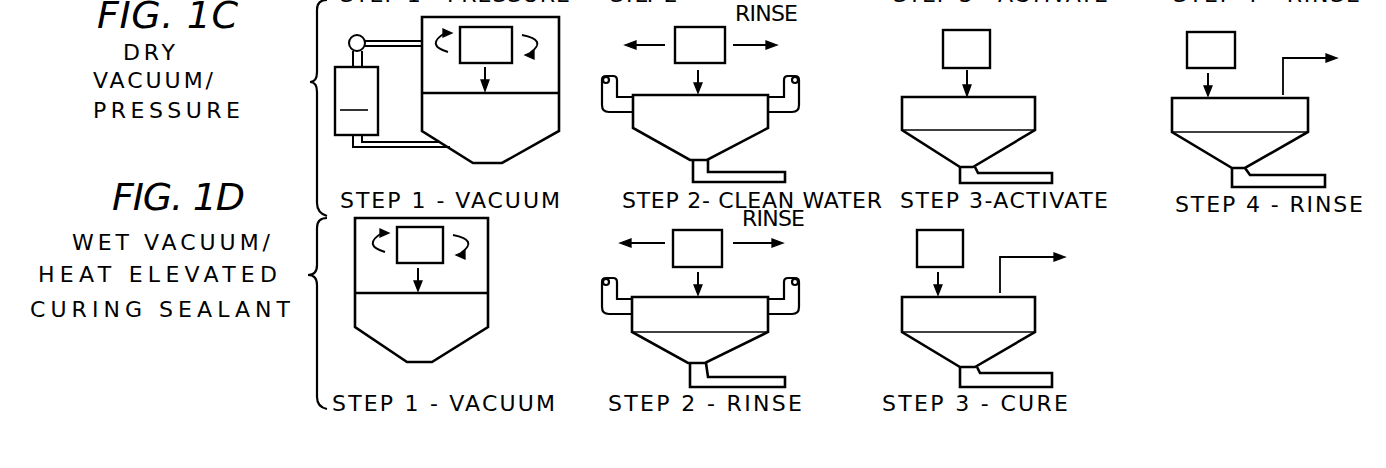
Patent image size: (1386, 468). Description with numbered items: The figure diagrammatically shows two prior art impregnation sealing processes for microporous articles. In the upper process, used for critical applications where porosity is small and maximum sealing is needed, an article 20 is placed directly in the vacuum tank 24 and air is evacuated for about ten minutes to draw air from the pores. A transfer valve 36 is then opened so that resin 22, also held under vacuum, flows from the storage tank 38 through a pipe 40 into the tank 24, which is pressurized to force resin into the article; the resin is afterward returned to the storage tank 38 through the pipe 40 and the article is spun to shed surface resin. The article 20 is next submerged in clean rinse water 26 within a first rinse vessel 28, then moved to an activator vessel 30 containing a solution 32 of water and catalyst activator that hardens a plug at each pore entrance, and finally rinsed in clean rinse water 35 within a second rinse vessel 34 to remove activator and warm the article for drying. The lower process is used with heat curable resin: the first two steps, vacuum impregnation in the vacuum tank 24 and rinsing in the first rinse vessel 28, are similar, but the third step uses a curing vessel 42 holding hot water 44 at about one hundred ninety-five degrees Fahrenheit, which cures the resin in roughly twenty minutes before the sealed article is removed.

In FIG. 1C, the article 20 is at (497, 53).
In FIG. 1D, the article 20 is at (425, 252).
In FIG. 1C, the resin 22 is at (548, 115).
In FIG. 1D, the resin 22 is at (480, 308).
In FIG. 1C, the vacuum tank 24 is at (560, 77).
In FIG. 1D, the vacuum tank 24 is at (488, 226).
In FIG. 1D, the clean rinse water 26 is at (643, 312).
In FIG. 1C, the first rinse vessel 28 is at (770, 120).
In FIG. 1D, the first rinse vessel 28 is at (770, 322).
In FIG. 1C, the activator vessel 30 is at (1035, 123).
In FIG. 1C, the solution 32 is at (918, 117).
In FIG. 1C, the second rinse vessel 34 is at (1308, 122).
In FIG. 1C, the clean rinse water 35 is at (1188, 118).
In FIG. 1C, the transfer valve 36 is at (361, 36).
In FIG. 1C, the storage tank 38 is at (356, 101).
In FIG. 1C, the pipe 40 is at (402, 50).
In FIG. 1D, the curing vessel 42 is at (1035, 320).
In FIG. 1D, the hot water 44 is at (915, 315).